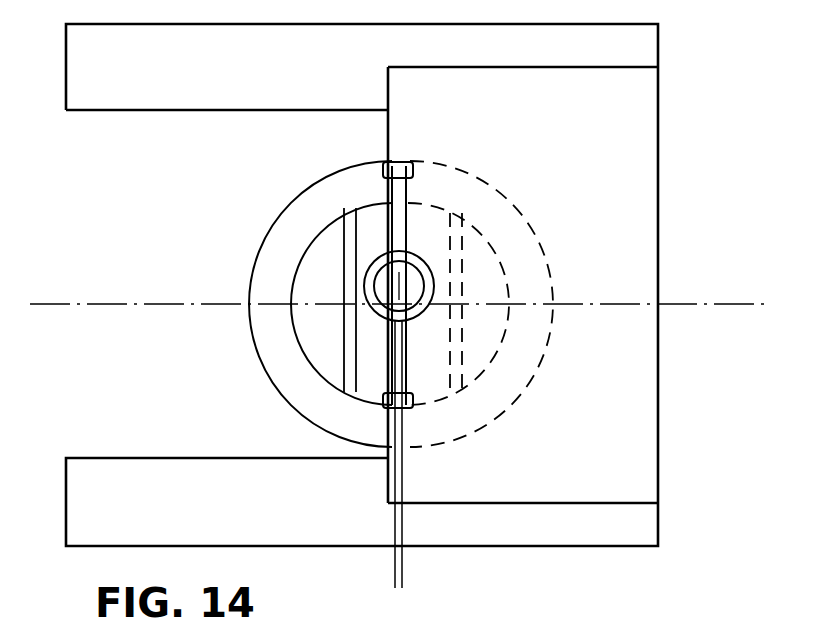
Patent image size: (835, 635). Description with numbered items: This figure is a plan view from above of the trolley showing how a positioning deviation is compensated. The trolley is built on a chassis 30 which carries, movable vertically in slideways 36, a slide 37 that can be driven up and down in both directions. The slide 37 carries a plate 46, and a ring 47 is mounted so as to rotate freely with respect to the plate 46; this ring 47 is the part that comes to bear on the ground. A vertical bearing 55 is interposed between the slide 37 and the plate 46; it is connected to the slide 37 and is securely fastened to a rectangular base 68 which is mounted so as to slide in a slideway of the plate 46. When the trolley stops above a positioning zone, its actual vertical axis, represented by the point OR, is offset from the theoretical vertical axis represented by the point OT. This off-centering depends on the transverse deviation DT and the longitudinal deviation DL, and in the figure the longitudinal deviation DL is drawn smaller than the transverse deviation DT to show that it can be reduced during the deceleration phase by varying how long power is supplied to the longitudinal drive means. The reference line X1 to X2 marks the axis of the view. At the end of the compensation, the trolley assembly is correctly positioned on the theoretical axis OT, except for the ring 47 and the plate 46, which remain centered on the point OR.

The chassis 30 is at (640, 88).
The slideways 36 is at (403, 160).
The slide 37 is at (400, 192).
The plate 46 is at (300, 331).
The ring 47 is at (302, 196).
The vertical bearing 55 is at (404, 308).
The base 68 is at (368, 386).
The theoretical vertical axis OT is at (401, 285).
The actual vertical axis OR is at (401, 303).
The transverse deviation DT is at (400, 286).
The longitudinal deviation DL is at (365, 573).
The axis end X1 is at (78, 298).
The axis end X2 is at (751, 293).